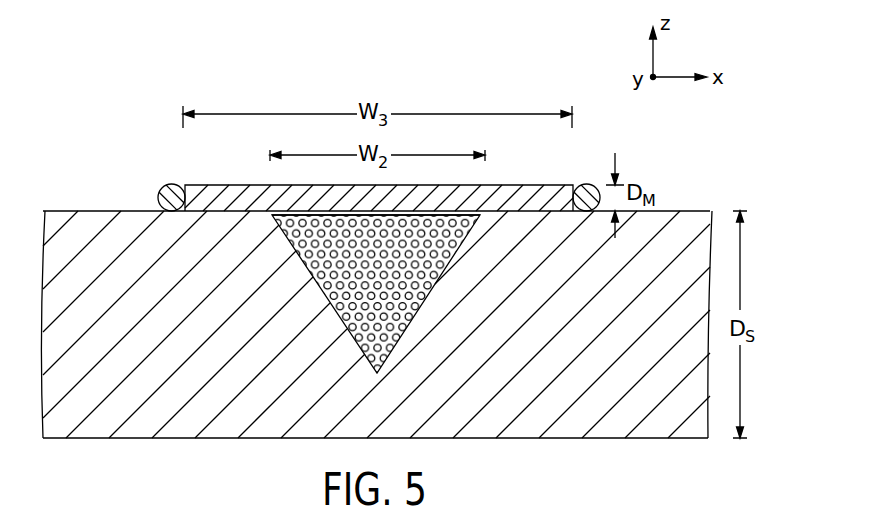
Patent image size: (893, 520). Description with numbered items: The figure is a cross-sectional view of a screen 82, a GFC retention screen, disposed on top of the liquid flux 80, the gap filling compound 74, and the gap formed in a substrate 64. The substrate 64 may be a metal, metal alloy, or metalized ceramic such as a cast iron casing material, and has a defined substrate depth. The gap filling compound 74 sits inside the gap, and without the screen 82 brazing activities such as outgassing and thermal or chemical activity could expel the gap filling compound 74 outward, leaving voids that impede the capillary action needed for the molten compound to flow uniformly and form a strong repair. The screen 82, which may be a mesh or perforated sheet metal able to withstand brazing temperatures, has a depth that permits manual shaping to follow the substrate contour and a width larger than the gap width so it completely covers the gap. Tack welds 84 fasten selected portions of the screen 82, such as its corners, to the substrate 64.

The substrate 64 is at (700, 211).
The gap filling compound 74 is at (353, 337).
The liquid flux 80 is at (298, 210).
The screen 82 is at (540, 186).
The tack welds 84 is at (162, 188).